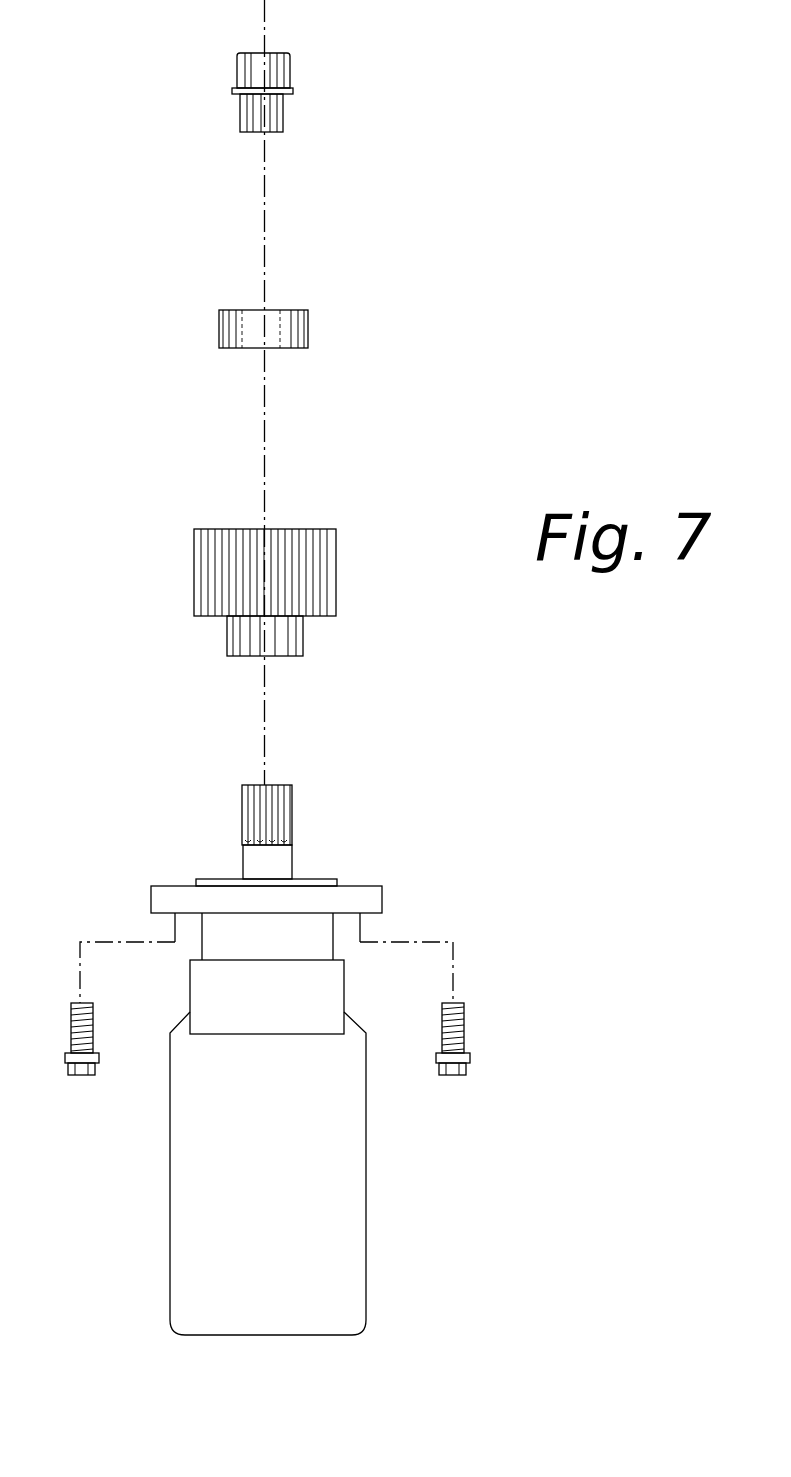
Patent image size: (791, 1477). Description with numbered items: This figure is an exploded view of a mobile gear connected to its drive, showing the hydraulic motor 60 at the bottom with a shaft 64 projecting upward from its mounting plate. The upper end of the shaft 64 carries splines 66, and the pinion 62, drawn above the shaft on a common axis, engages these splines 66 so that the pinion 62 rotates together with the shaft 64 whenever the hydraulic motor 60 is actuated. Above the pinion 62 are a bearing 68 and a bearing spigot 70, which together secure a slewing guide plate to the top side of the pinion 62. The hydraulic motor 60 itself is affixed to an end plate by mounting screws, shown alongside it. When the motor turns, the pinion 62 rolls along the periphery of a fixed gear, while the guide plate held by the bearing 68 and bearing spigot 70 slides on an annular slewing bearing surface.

The hydraulic motor 60 is at (397, 900).
The pinion 62 is at (350, 563).
The shaft 64 is at (268, 860).
The splines 66 is at (256, 810).
The bearing 68 is at (322, 330).
The bearing spigot 70 is at (305, 74).